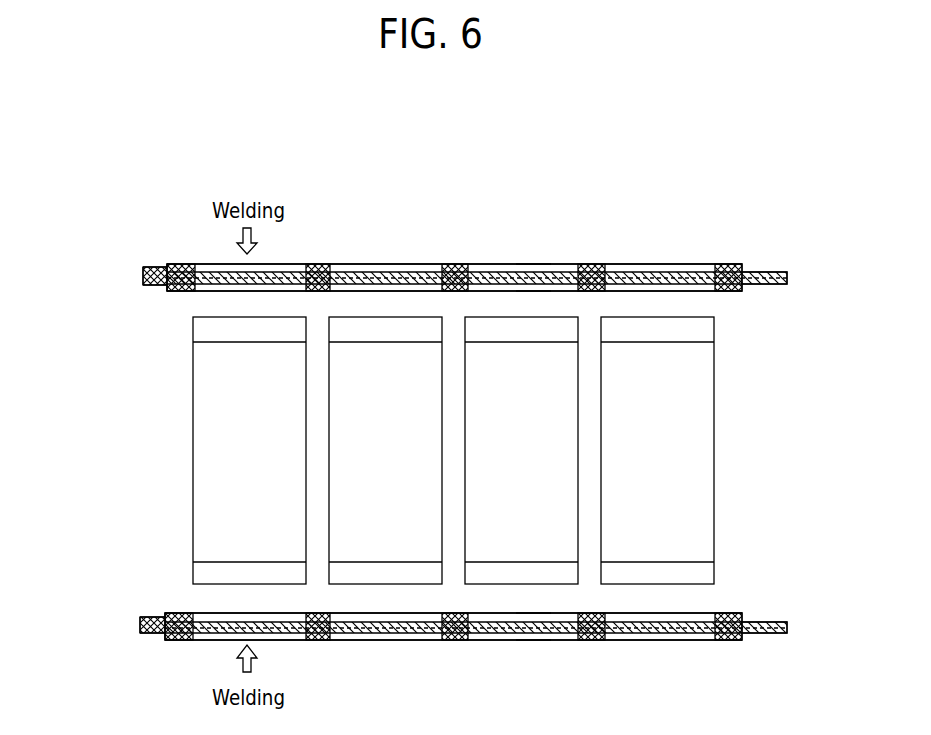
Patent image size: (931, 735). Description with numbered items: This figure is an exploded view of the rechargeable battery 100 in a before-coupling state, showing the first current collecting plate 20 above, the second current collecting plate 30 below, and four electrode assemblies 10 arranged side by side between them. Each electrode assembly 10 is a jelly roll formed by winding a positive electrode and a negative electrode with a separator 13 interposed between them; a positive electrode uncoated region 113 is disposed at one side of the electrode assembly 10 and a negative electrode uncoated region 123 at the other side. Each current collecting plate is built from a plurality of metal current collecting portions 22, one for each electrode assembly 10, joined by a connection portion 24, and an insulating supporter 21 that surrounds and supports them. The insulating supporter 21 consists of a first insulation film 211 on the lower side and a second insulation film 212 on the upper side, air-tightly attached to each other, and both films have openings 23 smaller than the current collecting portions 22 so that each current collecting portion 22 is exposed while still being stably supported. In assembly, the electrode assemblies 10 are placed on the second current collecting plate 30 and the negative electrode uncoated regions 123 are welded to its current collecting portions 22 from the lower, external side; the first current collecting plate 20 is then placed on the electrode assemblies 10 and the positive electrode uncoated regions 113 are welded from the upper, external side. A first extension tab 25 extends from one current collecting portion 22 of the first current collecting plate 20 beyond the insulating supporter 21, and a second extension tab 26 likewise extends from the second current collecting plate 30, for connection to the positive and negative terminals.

The rechargeable battery 100 is at (472, 152).
The electrode assembly 10 is at (464, 451).
The separator 13 is at (193, 447).
The positive electrode uncoated region 113 is at (193, 330).
The negative electrode uncoated region 123 is at (193, 571).
The first current collecting plate 20 is at (656, 263).
The second current collecting plate 30 is at (657, 641).
The insulating supporter 21 is at (87, 247).
The first insulation film 211 is at (153, 284).
The second insulation film 212 is at (153, 266).
The current collecting portion 22 is at (389, 263).
The opening 23 is at (551, 263).
The connection portion 24 is at (453, 263).
The first extension tab 25 is at (772, 271).
The second extension tab 26 is at (771, 636).